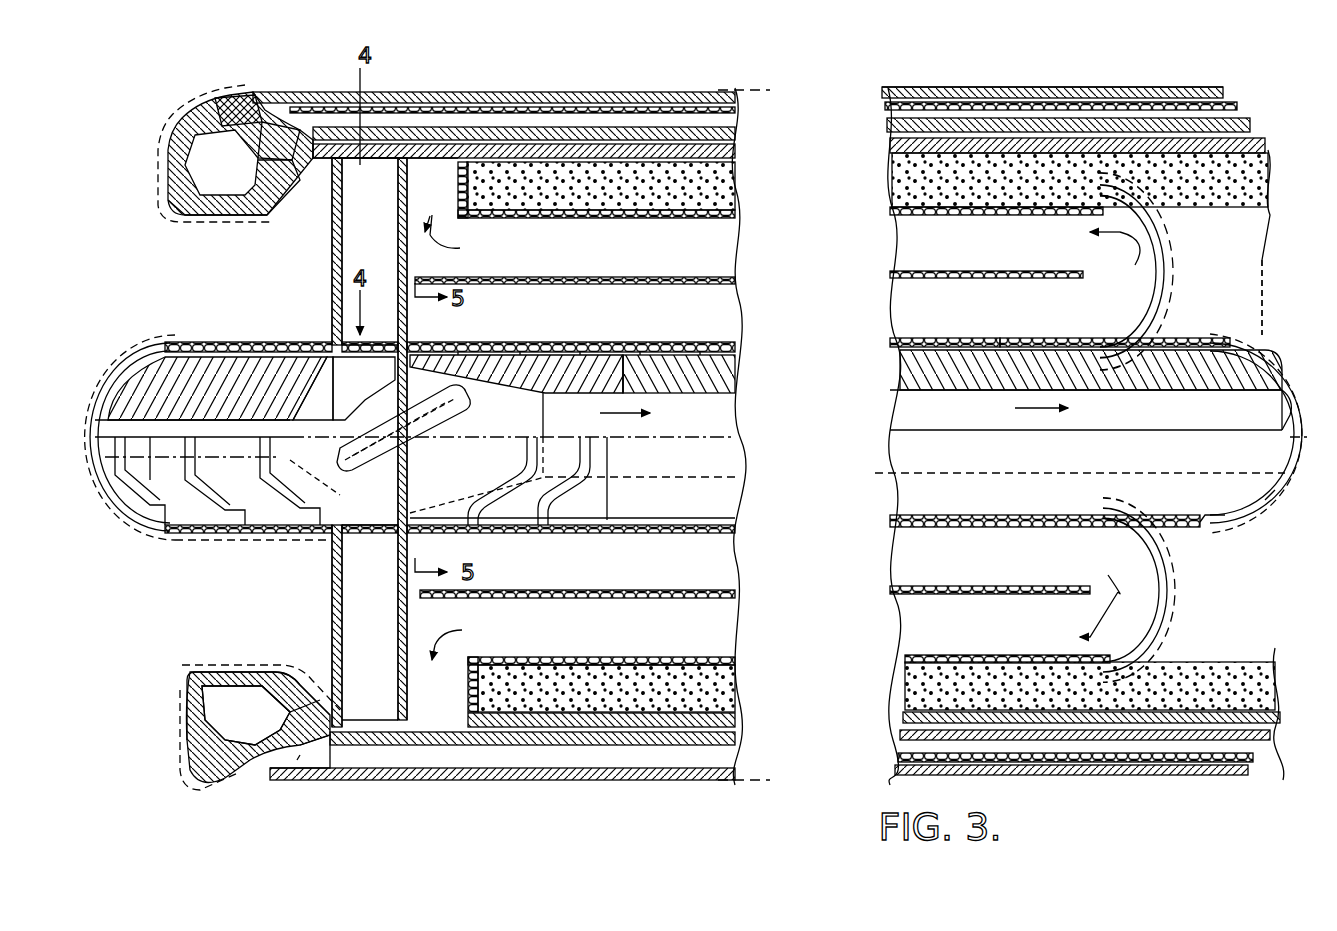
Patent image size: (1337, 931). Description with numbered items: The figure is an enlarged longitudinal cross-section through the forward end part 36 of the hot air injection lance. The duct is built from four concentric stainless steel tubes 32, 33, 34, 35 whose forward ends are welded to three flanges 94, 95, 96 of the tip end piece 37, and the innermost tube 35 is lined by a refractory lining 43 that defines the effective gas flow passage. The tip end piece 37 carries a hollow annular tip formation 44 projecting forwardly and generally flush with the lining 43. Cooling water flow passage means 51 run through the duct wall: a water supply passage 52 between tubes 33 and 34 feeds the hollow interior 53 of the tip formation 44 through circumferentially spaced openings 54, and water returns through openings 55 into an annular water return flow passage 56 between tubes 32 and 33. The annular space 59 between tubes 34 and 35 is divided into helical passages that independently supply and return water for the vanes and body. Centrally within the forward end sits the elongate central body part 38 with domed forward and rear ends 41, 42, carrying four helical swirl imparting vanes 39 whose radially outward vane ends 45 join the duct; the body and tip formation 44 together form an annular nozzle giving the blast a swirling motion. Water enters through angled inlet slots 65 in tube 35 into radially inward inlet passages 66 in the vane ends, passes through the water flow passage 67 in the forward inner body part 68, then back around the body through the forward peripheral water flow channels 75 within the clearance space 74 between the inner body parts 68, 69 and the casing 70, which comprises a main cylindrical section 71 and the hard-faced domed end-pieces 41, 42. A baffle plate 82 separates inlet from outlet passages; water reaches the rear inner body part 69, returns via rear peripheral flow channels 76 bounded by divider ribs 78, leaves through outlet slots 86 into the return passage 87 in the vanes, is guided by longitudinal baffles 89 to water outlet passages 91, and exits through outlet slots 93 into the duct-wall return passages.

The duct tube 32 is at (1028, 88).
The duct tube 33 is at (1068, 104).
The duct tube 34 is at (1112, 120).
The innermost duct tube 35 is at (1160, 140).
The forward end part 36 is at (920, 88).
The tip end piece 37 is at (175, 192).
The central body part 38 is at (1262, 330).
The swirl imparting vanes 39 is at (1150, 242).
The domed forward end 41 is at (110, 360).
The domed rear end 42 is at (1283, 338).
The refractory lining 43 is at (1252, 180).
The tip formation 44 is at (256, 208).
The vane ends 45 is at (328, 262).
The cooling water flow passage means 51 is at (1268, 768).
The water supply passage 52 is at (650, 108).
The hollow interior 53 is at (230, 690).
The openings 54 is at (280, 710).
The openings 55 is at (225, 760).
The water return flow passage 56 is at (615, 92).
The annular space 59 is at (700, 130).
The water inlet slots 65 is at (345, 150).
The inlet passages 66 is at (332, 305).
The water flow passage 67 is at (178, 420).
The forward inner body part 68 is at (222, 395).
The rear inner body part 69 is at (548, 365).
The casing 70 is at (708, 537).
The main cylindrical section 71 is at (700, 345).
The clearance space 74 is at (925, 336).
The forward peripheral water flow channels 75 is at (165, 497).
The rear peripheral flow channels 76 is at (1190, 530).
The divider ribs 78 is at (1253, 508).
The baffle plate 82 is at (455, 265).
The outlet slots 86 is at (440, 344).
The return passage 87 is at (575, 320).
The longitudinal baffles 89 is at (636, 277).
The water outlet passages 91 is at (440, 155).
The outlet slots 93 is at (418, 155).
The flange 94 is at (217, 100).
The flange 95 is at (290, 125).
The flange 96 is at (292, 168).